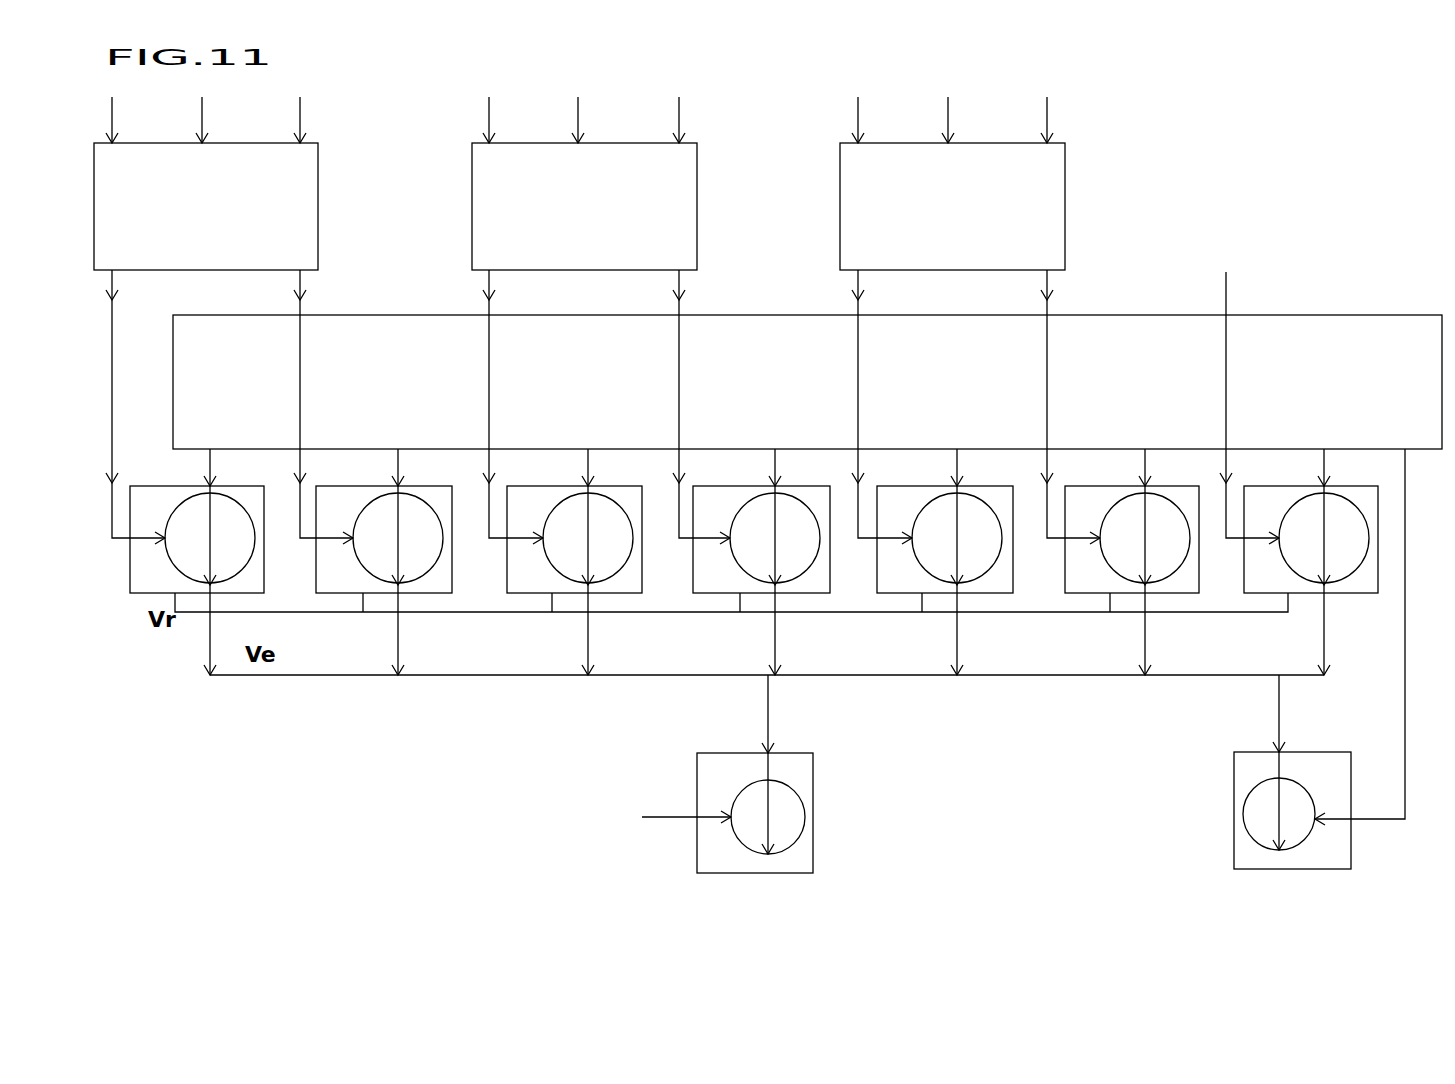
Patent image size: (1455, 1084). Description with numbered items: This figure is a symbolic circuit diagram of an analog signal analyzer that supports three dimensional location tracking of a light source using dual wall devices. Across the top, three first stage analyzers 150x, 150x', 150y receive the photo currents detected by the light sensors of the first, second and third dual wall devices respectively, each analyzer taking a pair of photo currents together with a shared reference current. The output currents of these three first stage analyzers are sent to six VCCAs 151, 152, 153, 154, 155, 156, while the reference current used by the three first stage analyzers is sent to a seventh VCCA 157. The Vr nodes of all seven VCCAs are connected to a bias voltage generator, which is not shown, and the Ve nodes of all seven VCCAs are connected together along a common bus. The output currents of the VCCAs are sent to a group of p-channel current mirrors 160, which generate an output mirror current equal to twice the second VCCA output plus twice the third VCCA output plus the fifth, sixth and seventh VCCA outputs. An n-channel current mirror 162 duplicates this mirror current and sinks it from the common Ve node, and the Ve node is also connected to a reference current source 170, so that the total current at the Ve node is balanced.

The first stage analyzer 150x is at (251, 183).
The first stage analyzer 150x' is at (628, 183).
The first stage analyzer 150y is at (1060, 193).
The p-channel current mirrors 160 is at (1280, 333).
The VCCA 151 is at (137, 577).
The VCCA 152 is at (328, 577).
The VCCA 153 is at (515, 577).
The VCCA 154 is at (705, 577).
The VCCA 155 is at (892, 577).
The VCCA 156 is at (1080, 577).
The VCCA 157 is at (1252, 577).
The reference current source 170 is at (805, 777).
The n-channel current mirror 162 is at (1245, 845).